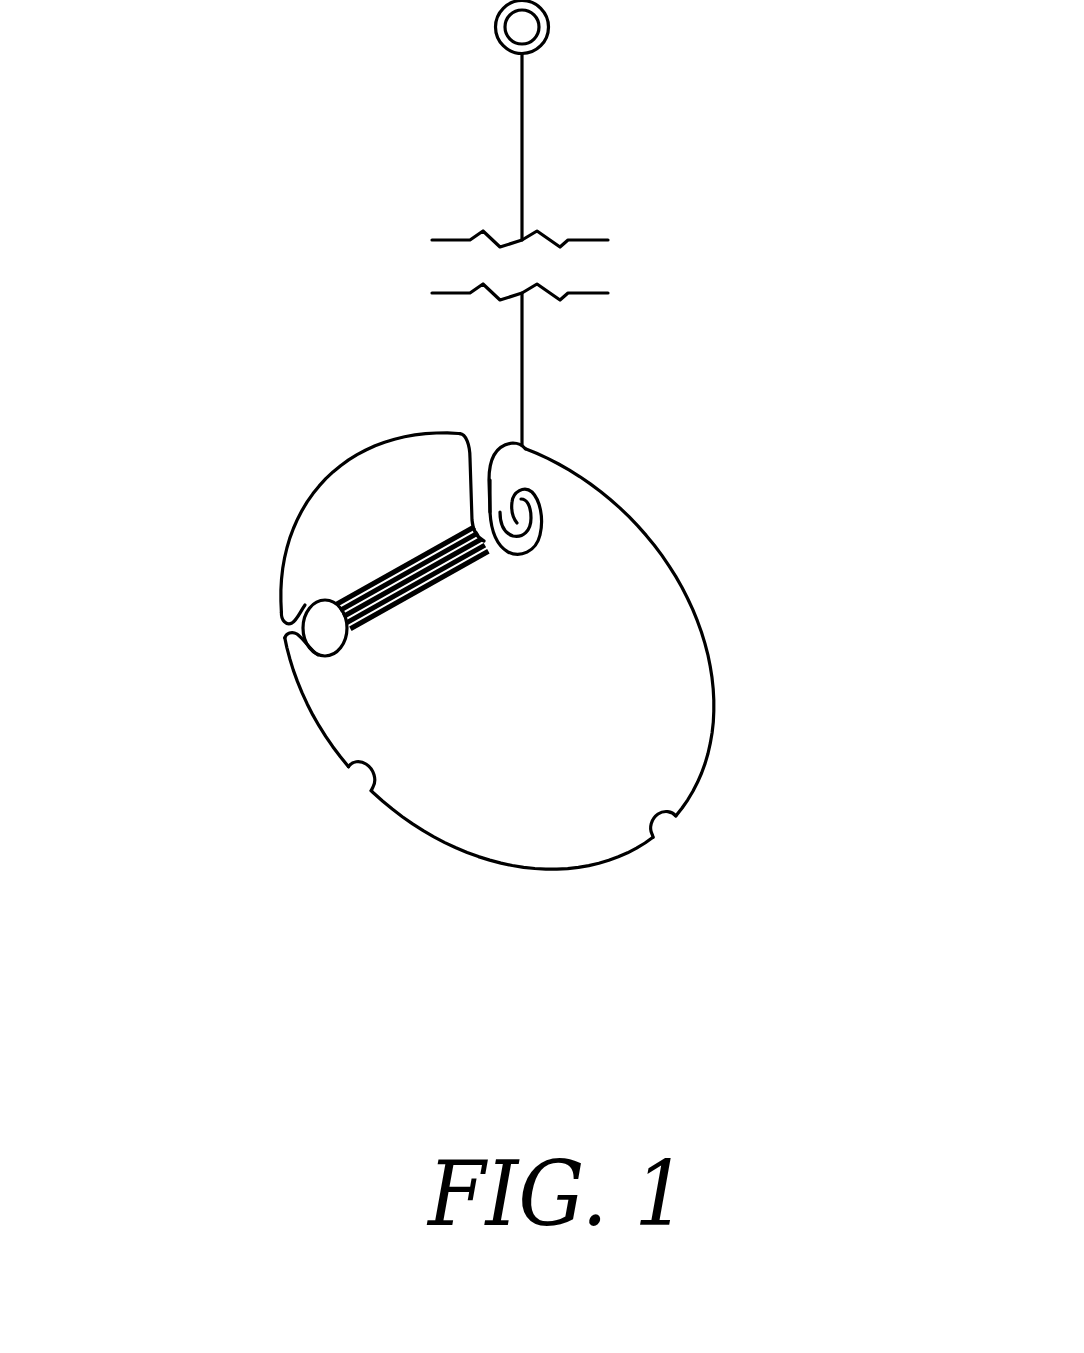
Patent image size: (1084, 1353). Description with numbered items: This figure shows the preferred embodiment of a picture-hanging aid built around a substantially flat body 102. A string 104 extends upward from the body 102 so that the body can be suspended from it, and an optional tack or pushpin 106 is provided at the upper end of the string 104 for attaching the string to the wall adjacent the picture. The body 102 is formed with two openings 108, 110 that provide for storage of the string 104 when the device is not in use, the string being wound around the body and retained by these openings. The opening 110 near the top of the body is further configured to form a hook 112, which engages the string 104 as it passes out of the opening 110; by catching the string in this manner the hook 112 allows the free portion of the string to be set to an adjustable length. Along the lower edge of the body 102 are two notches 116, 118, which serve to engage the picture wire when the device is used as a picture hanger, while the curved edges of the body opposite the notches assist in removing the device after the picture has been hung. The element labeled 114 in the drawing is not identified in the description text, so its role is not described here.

The body 102 is at (712, 651).
The string 104 is at (527, 381).
The tack or pushpin 106 is at (556, 53).
The opening 108 is at (284, 605).
The opening 110 is at (472, 432).
The hook 112 is at (560, 507).
The wire bundle 114 is at (385, 575).
The notch 116 is at (355, 772).
The notch 118 is at (668, 837).